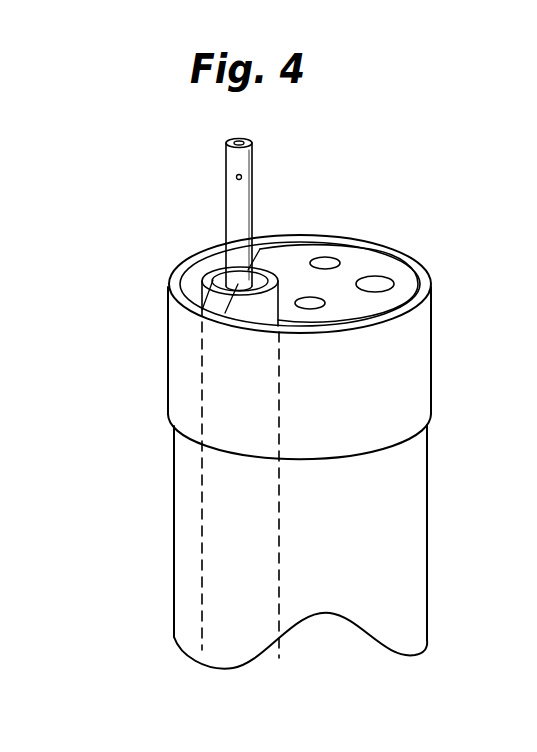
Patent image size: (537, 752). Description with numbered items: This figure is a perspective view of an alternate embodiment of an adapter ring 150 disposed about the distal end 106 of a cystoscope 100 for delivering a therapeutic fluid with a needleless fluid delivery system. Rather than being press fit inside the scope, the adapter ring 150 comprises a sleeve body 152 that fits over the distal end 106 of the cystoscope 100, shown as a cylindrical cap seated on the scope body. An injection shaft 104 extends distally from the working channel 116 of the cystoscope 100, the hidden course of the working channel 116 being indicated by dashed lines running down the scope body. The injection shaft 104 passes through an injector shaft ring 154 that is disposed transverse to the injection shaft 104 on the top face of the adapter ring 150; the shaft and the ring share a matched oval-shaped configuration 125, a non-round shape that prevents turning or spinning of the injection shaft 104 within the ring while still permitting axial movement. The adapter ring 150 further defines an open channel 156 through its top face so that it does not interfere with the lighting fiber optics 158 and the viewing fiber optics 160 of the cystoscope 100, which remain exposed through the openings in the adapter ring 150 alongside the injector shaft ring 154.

The cystoscope 100 is at (427, 498).
The injection shaft 104 is at (226, 196).
The distal end 106 is at (370, 250).
The working channel 116 is at (200, 518).
The oval-shaped configuration 125 is at (229, 141).
The adapter ring 150 is at (284, 347).
The sleeve body 152 is at (168, 349).
The injector shaft ring 154 is at (207, 298).
The open channel 156 is at (357, 304).
The lighting fiber optics 158 is at (326, 257).
The viewing fiber optics 160 is at (418, 262).